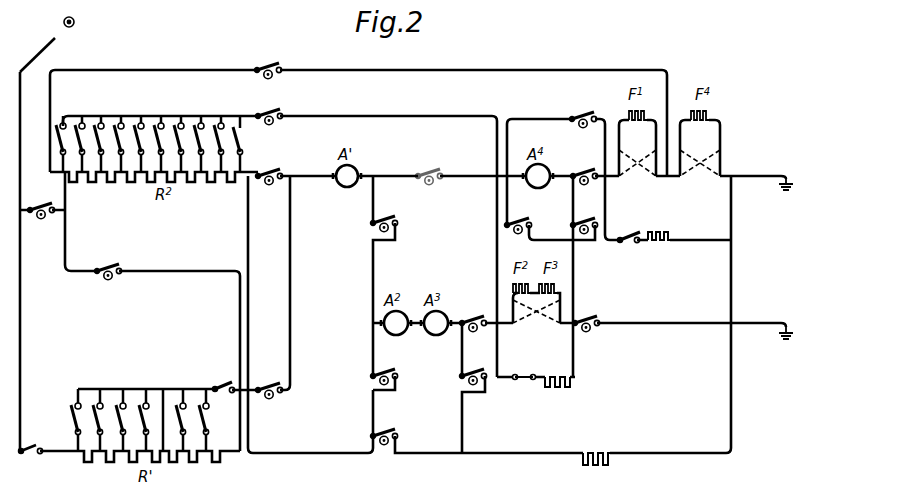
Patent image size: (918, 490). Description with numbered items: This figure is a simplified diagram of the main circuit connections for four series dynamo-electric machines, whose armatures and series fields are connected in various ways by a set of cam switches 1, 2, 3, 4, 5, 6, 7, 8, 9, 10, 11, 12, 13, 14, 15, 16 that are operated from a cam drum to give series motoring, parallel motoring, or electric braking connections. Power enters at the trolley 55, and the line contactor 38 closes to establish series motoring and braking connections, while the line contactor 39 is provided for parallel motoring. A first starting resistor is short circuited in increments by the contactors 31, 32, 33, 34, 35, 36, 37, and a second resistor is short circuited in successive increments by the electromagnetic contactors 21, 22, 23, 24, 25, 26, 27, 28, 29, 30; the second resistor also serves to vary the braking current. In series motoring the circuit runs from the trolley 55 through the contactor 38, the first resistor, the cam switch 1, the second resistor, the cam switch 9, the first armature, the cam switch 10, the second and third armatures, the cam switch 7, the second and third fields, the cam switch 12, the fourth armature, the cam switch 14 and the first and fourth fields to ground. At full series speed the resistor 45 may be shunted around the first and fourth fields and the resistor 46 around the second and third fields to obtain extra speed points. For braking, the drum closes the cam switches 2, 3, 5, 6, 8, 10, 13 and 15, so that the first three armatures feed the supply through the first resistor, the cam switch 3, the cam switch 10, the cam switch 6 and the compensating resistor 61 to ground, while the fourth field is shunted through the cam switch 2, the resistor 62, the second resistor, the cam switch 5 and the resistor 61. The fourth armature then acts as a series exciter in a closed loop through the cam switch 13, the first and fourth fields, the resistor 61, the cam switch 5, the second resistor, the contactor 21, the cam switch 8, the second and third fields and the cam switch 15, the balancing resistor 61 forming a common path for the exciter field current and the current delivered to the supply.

The cam switch 1 is at (104, 268).
The cam switch 2 is at (267, 60).
The cam switch 3 is at (268, 381).
The cam switch 4 is at (383, 368).
The cam switch 5 is at (383, 428).
The cam switch 6 is at (472, 368).
The cam switch 7 is at (472, 314).
The cam switch 8 is at (268, 107).
The cam switch 9 is at (268, 167).
The cam switch 10 is at (383, 215).
The cam switch 11 is at (428, 169).
The cam switch 12 is at (538, 219).
The cam switch 13 is at (582, 110).
The cam switch 14 is at (583, 168).
The cam switch 15 is at (584, 219).
The cam switch 16 is at (585, 314).
The contactor 21 is at (63, 133).
The contactor 22 is at (83, 133).
The contactor 23 is at (104, 133).
The contactor 24 is at (123, 133).
The contactor 25 is at (144, 133).
The contactor 26 is at (164, 133).
The contactor 27 is at (184, 133).
The contactor 28 is at (204, 133).
The contactor 29 is at (224, 133).
The contactor 30 is at (243, 136).
The contactor 31 is at (68, 408).
The contactor 32 is at (90, 408).
The contactor 33 is at (114, 408).
The contactor 34 is at (139, 408).
The contactor 35 is at (175, 408).
The contactor 36 is at (199, 408).
The contactor 37 is at (223, 378).
The line contactor 38 is at (26, 446).
The line contactor 39 is at (38, 224).
The resistor 45 is at (662, 247).
The resistor 46 is at (562, 388).
The trolley 55 is at (47, 42).
The compensating resistor 61 is at (606, 450).
The resistor 62 is at (56, 176).